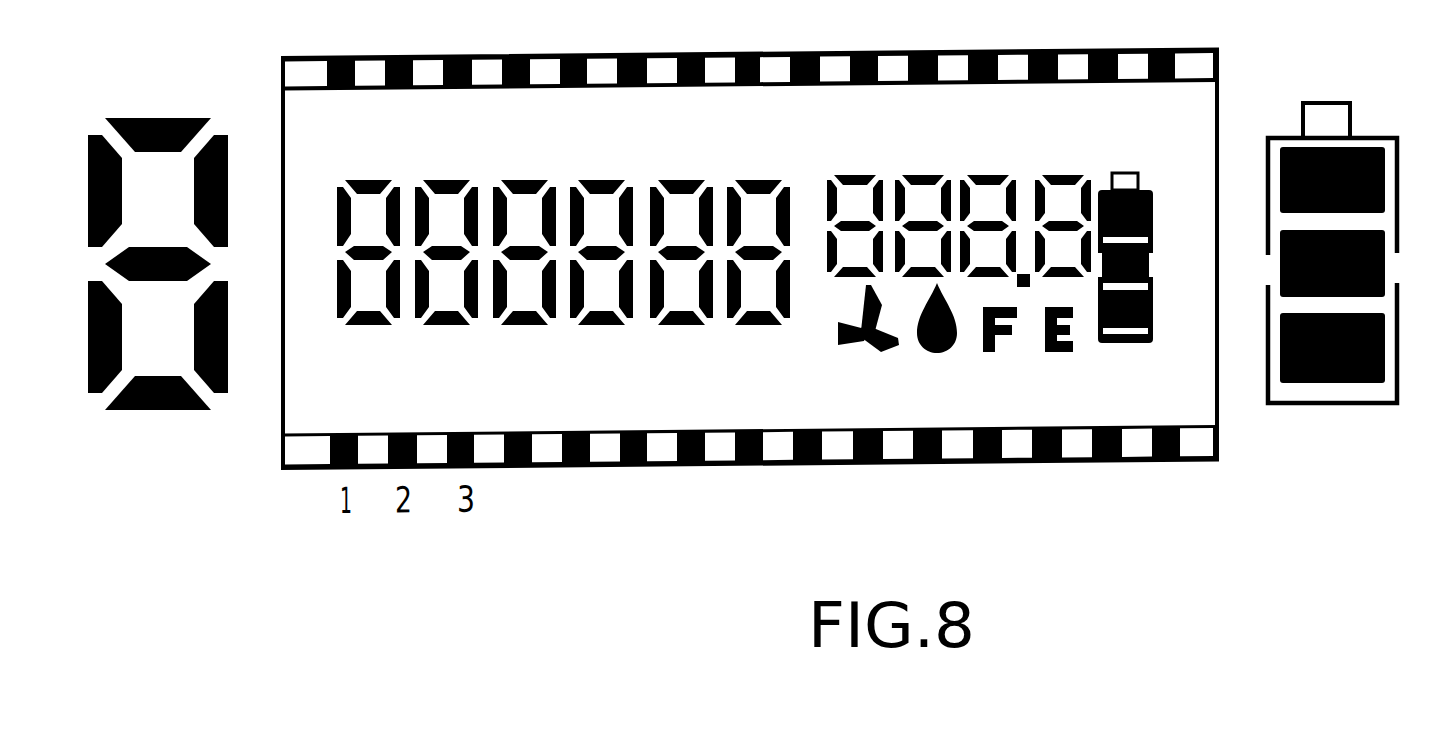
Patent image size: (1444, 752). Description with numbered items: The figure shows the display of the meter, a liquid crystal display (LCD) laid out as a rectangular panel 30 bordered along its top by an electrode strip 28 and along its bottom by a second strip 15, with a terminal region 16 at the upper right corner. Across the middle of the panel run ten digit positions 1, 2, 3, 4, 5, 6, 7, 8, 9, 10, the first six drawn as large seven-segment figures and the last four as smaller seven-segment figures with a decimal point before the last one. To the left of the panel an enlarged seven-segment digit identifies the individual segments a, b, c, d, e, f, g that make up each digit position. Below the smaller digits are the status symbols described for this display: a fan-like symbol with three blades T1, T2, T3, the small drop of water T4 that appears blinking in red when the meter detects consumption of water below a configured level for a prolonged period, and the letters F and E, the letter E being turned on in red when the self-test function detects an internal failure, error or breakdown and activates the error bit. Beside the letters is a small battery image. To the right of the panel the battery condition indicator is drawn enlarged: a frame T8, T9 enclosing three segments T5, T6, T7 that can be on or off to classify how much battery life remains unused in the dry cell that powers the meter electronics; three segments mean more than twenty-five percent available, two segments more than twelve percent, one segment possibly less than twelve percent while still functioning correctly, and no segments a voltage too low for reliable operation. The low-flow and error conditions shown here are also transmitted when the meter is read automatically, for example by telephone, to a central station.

The liquid crystal display panel 30 is at (750, 234).
The upper electrode strip 28 is at (750, 45).
The upper terminal 16 is at (1185, 41).
The lower terminal 15 is at (750, 475).
The first digit display 1 is at (368, 222).
The second digit display 2 is at (446, 222).
The third digit display 3 is at (524, 222).
The fourth digit display 4 is at (601, 222).
The fifth digit display 5 is at (681, 222).
The sixth digit display 6 is at (758, 222).
The seventh digit display 7 is at (855, 196).
The eighth digit display 8 is at (923, 196).
The ninth digit display 9 is at (988, 196).
The tenth digit display 10 is at (1054, 201).
The segment a is at (158, 107).
The segment b is at (230, 191).
The segment c is at (226, 337).
The segment d is at (158, 421).
The segment e is at (88, 337).
The segment f is at (92, 191).
The segment g is at (158, 240).
The fan blade indicator 1 T1 is at (852, 308).
The fan blade indicator 2 T2 is at (882, 362).
The fan blade indicator 3 T3 is at (837, 346).
The drop of water symbol T4 is at (933, 341).
The battery segment T5 is at (1357, 180).
The battery segment T6 is at (1357, 263).
The battery segment T7 is at (1357, 348).
The battery frame T8 is at (1326, 95).
The battery frame T9 is at (1332, 297).